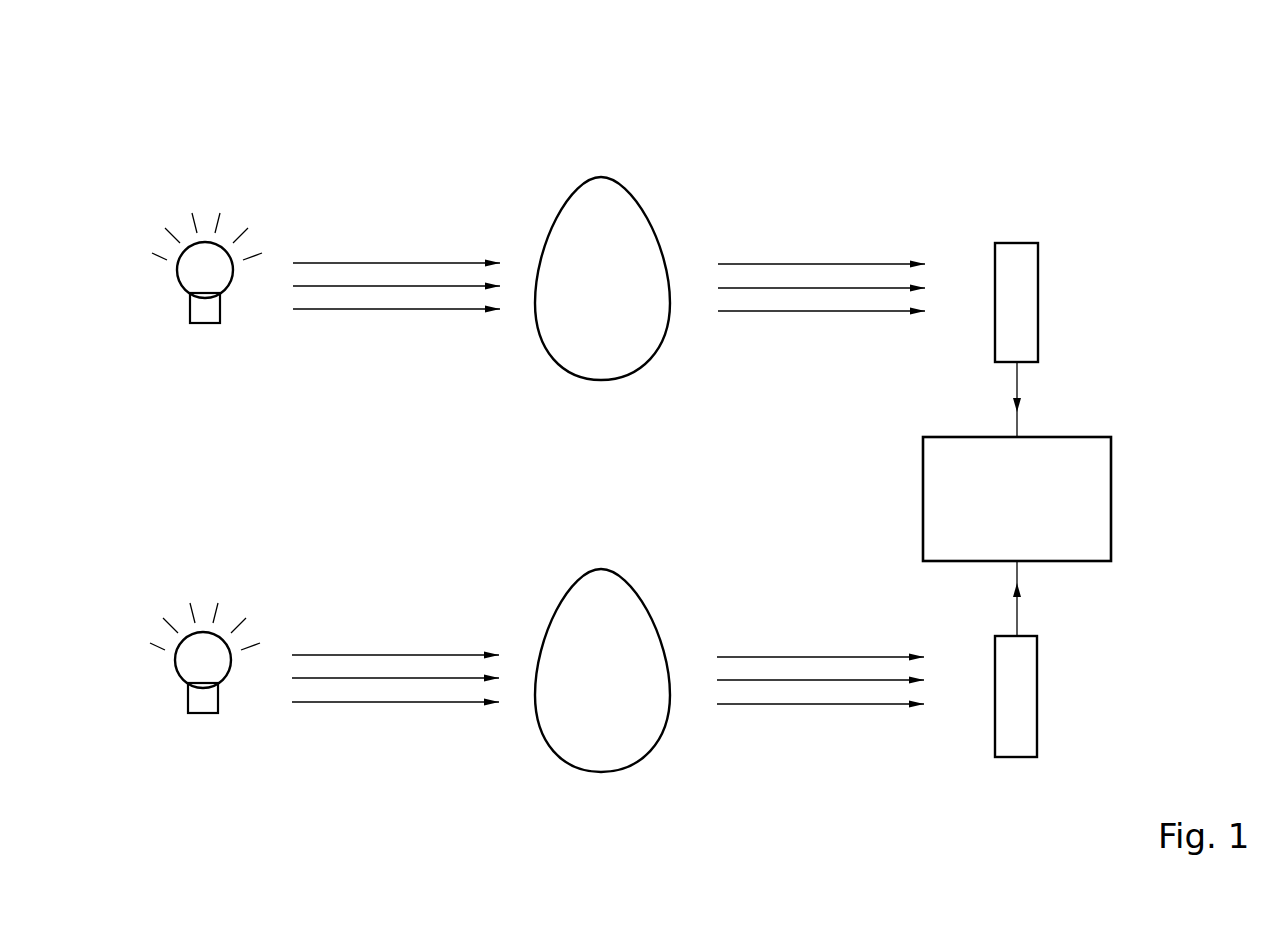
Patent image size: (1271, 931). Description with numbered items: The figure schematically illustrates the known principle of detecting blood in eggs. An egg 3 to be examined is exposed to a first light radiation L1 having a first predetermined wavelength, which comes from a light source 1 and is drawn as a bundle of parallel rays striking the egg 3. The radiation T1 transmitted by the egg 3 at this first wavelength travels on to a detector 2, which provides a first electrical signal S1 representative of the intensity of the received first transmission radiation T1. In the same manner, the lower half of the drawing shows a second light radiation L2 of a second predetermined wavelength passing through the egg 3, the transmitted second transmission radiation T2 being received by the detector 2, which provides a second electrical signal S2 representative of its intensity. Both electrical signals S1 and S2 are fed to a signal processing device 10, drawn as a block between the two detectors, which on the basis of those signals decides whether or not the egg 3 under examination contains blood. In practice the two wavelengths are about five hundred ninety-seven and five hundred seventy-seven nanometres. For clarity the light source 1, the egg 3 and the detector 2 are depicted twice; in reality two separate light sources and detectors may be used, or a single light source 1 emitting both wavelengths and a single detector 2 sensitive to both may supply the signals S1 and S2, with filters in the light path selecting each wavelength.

The light source 1 is at (214, 166).
The detector 2 is at (1020, 243).
The egg 3 is at (603, 175).
The signal processing device 10 is at (1002, 516).
The first light radiation L1 is at (380, 262).
The second light radiation L2 is at (380, 654).
The first transmission radiation T1 is at (818, 263).
The second transmission radiation T2 is at (818, 656).
The first electrical signal S1 is at (1040, 399).
The second electrical signal S2 is at (1040, 598).